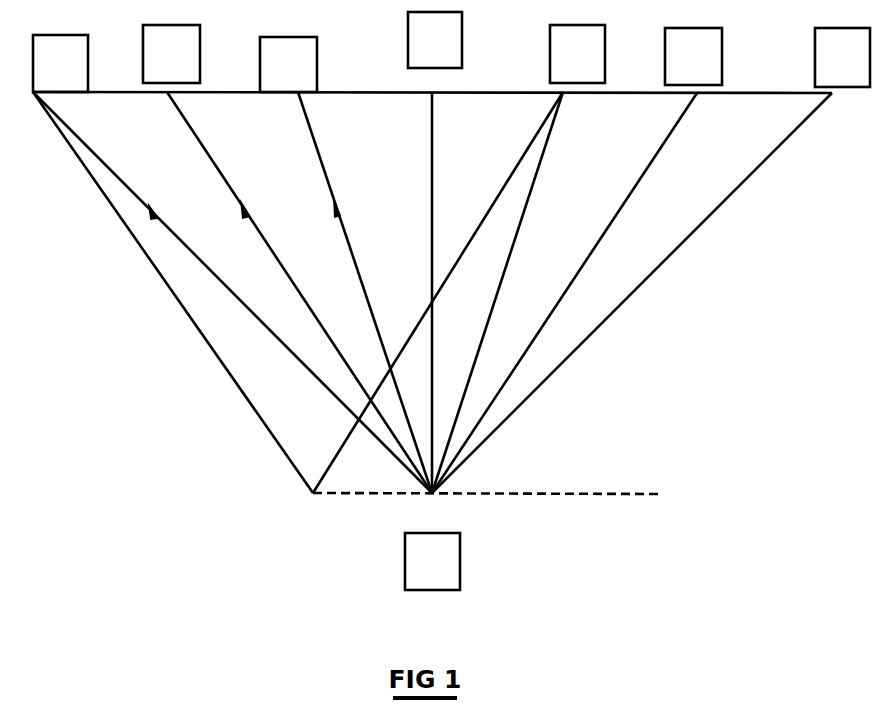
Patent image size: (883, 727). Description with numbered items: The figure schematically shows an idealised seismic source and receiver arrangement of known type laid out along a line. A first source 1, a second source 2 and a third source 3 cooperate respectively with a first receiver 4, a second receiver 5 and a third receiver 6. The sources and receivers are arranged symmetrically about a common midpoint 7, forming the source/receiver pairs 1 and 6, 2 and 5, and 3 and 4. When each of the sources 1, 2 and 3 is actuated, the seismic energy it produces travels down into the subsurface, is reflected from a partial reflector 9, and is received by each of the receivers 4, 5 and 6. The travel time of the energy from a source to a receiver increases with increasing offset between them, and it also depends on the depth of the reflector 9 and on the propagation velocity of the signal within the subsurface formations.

The first source 1 is at (232, 264).
The second source 2 is at (287, 259).
The third source 3 is at (346, 265).
The first receiver 4 is at (459, 259).
The second receiver 5 is at (577, 260).
The third receiver 6 is at (651, 260).
The common midpoint 7 is at (435, 252).
The partial reflector 9 is at (432, 561).